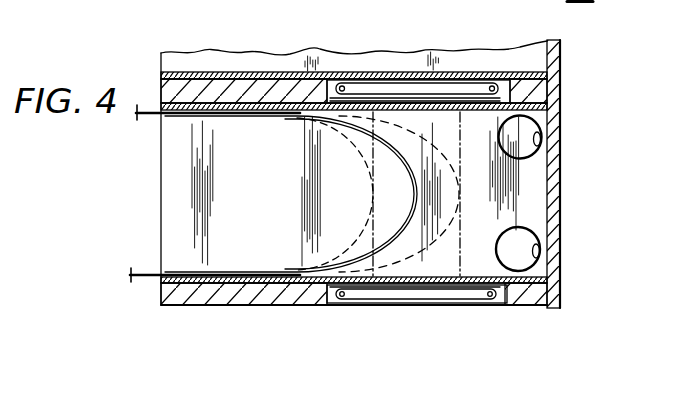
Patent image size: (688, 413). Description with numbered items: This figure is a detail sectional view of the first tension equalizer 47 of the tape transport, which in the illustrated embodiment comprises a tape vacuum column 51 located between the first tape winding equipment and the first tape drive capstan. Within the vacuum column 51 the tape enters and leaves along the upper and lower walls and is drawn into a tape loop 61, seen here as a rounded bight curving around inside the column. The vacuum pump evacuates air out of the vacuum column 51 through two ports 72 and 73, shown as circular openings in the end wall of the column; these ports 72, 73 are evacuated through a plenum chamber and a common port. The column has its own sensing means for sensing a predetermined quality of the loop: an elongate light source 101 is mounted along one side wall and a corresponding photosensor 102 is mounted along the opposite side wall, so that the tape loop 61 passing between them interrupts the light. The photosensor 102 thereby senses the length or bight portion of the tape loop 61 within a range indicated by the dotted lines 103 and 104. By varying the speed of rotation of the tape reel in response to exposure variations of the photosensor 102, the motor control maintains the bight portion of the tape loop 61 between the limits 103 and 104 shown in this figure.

The first tension equalizer 47 is at (538, 178).
The tape vacuum column 51 is at (264, 203).
The tape loop 61 is at (202, 273).
The port 72 is at (545, 250).
The port 73 is at (545, 131).
The elongate light source 101 is at (458, 284).
The photosensor 102 is at (443, 116).
The dotted line 103 is at (371, 170).
The dotted line 104 is at (462, 225).